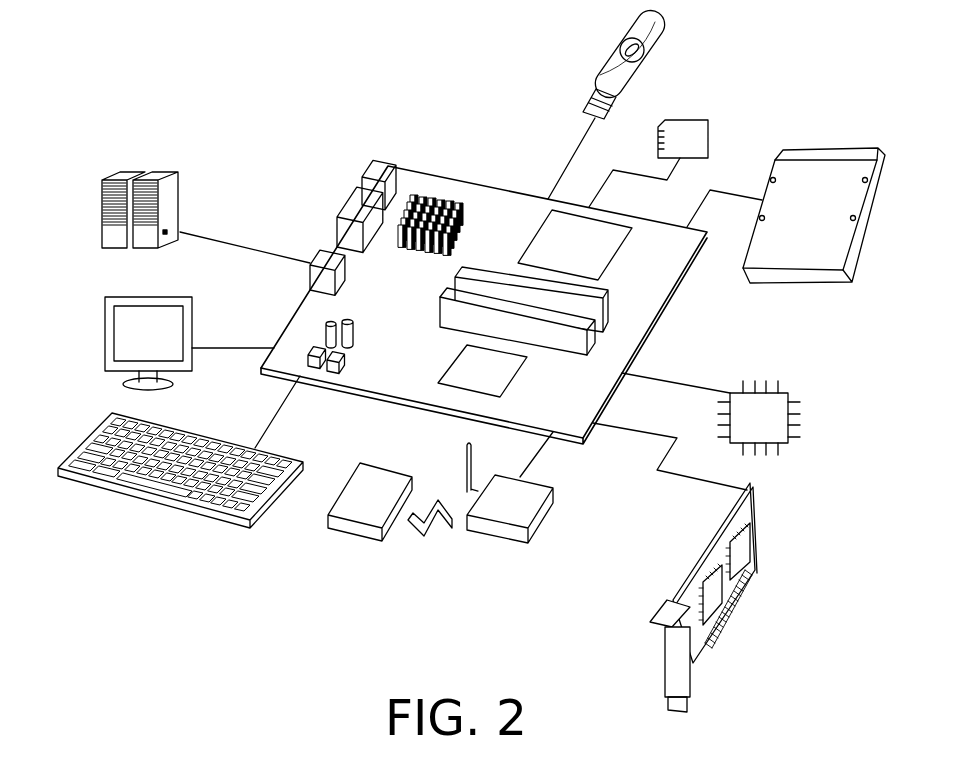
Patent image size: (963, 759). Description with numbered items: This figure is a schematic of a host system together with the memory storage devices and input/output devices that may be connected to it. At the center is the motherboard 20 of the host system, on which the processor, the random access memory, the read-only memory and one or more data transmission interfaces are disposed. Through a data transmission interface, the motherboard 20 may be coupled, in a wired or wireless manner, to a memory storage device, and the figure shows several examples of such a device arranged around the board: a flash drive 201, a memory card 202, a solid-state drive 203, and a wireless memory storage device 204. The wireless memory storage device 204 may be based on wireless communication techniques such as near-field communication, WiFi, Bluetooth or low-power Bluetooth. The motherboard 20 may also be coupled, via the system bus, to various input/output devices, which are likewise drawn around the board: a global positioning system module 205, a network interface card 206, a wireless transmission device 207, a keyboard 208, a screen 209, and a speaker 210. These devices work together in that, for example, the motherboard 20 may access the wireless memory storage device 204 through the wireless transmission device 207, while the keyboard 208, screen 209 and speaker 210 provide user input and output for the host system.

The motherboard 20 is at (487, 203).
The flash drive 201 is at (612, 55).
The memory card 202 is at (708, 127).
The solid-state drive (SSD) 203 is at (833, 150).
The wireless memory storage device 204 is at (345, 478).
The global positioning system (GPS) module 205 is at (795, 422).
The network interface card 206 is at (755, 540).
The wireless transmission device 207 is at (543, 525).
The keyboard 208 is at (178, 505).
The screen 209 is at (105, 352).
The speaker 210 is at (102, 235).